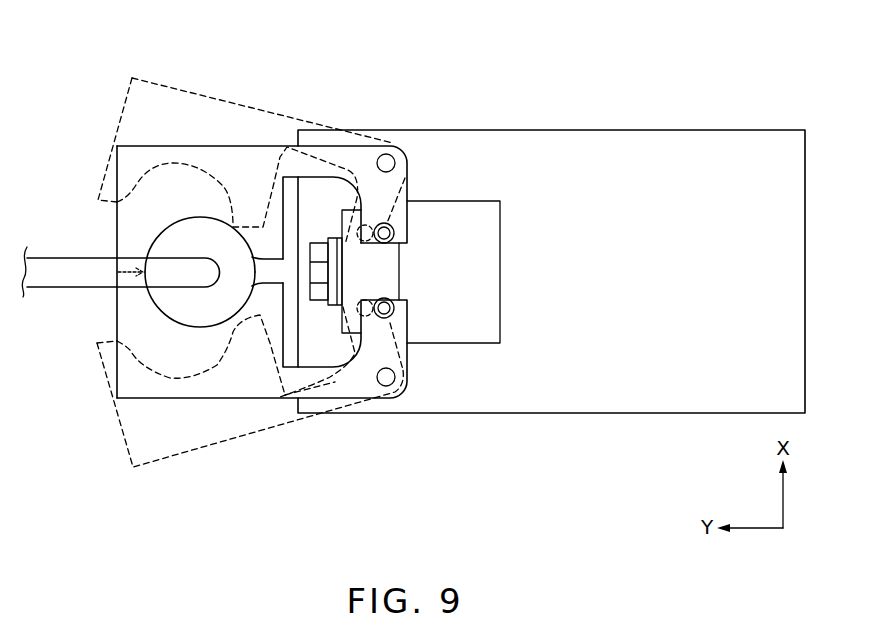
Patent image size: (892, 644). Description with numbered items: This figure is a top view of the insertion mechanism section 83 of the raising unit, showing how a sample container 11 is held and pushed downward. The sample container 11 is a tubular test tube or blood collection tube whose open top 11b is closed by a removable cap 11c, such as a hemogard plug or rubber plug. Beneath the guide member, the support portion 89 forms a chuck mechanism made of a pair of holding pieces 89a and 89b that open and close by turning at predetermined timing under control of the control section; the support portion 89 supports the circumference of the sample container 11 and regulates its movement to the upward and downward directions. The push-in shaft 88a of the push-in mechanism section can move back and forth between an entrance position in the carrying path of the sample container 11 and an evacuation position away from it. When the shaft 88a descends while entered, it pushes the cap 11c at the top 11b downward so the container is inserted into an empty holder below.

The sample container 11 is at (173, 181).
The top 11b is at (177, 243).
The cap 11c is at (172, 307).
The insertion mechanism section 83 is at (355, 90).
The shaft 88a is at (50, 272).
The support portion 89 is at (447, 138).
The holding piece 89a is at (235, 398).
The holding piece 89b is at (243, 146).